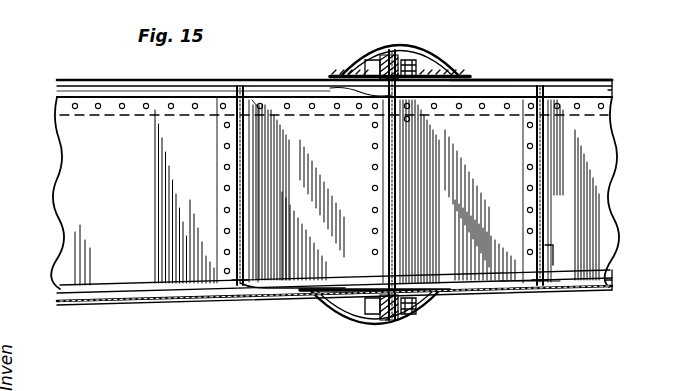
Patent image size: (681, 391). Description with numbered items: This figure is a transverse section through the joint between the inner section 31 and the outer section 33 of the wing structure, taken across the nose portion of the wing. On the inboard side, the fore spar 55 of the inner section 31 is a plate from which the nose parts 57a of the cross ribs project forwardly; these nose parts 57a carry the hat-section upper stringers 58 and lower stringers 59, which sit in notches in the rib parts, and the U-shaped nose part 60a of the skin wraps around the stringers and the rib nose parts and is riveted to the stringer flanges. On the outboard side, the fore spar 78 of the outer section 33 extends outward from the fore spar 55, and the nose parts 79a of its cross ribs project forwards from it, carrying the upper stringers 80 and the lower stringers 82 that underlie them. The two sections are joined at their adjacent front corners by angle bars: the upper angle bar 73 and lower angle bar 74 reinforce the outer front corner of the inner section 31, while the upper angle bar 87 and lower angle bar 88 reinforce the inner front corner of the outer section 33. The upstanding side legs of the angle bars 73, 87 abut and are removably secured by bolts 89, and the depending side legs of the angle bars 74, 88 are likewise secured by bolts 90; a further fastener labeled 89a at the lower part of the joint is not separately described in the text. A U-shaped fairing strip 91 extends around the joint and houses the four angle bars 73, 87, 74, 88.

The inner section 31 is at (81, 77).
The outer section 33 is at (589, 77).
The upper stringers 58 is at (125, 92).
The upper longitudinally extending stringers 80 is at (608, 91).
The fore spar 55 is at (76, 160).
The nose parts of cross ribs 57a is at (226, 199).
The nose part of skin 60a is at (263, 86).
The fairing strip 91 is at (372, 56).
The upper angle bar 73 is at (388, 54).
The upper angle bar 87 is at (400, 62).
The bolts 89 is at (418, 66).
The lower angle bar 74 is at (383, 318).
The lower angle bar 88 is at (400, 315).
The bolts 90 is at (420, 306).
The nose parts of cross ribs 79a is at (535, 236).
The fore spar 78 is at (598, 213).
The lower stringers 59 is at (127, 293).
The lower stringers 82 is at (606, 270).
The bottom bolt 89a is at (516, 295).